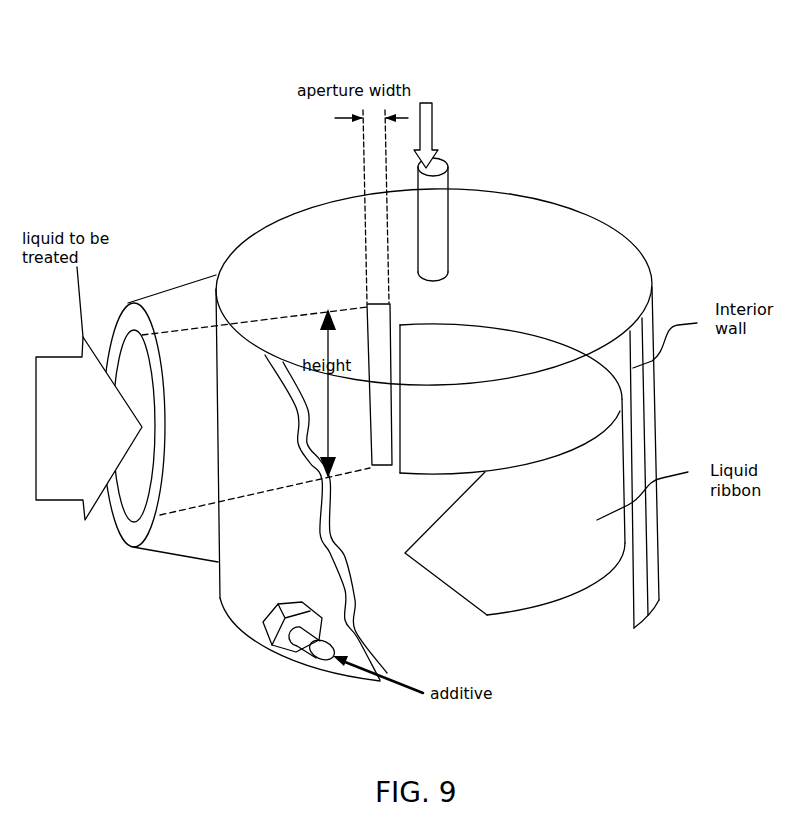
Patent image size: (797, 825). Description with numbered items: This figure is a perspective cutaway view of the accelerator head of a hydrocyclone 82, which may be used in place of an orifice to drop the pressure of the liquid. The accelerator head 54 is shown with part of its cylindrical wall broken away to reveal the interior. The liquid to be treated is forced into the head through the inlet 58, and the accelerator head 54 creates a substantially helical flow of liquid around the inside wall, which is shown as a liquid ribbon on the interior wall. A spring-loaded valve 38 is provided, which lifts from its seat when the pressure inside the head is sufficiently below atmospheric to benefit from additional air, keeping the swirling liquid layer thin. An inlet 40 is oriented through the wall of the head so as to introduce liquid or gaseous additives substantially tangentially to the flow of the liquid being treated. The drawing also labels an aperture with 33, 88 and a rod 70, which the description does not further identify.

The hydrocyclone 82 is at (369, 348).
The accelerator head 54 is at (172, 106).
The liquid inlet pipe 33 is at (236, 412).
The inlet 58 is at (128, 363).
The spring-loaded valve 38 is at (281, 332).
The aperture plate 88 is at (377, 332).
The rod 70 is at (448, 173).
The inlet 40 is at (310, 657).